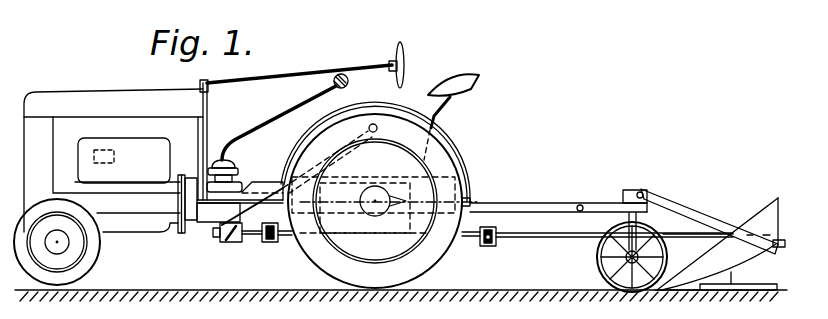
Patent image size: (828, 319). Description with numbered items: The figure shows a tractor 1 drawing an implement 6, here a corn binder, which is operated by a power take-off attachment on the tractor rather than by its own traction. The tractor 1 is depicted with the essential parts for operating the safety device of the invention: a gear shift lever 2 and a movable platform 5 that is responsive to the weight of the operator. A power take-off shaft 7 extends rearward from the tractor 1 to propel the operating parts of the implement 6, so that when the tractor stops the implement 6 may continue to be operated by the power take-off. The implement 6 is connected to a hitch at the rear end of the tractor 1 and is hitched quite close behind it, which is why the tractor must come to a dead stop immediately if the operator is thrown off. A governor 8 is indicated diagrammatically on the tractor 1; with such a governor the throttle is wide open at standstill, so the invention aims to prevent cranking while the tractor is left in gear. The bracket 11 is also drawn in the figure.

The tractor 1 is at (457, 52).
The gear shift lever 2 is at (266, 121).
The movable platform 5 is at (448, 162).
The implement 6 is at (731, 186).
The power take-off shaft 7 is at (538, 245).
The governor 8 is at (98, 150).
The crank bracket 11 is at (249, 240).